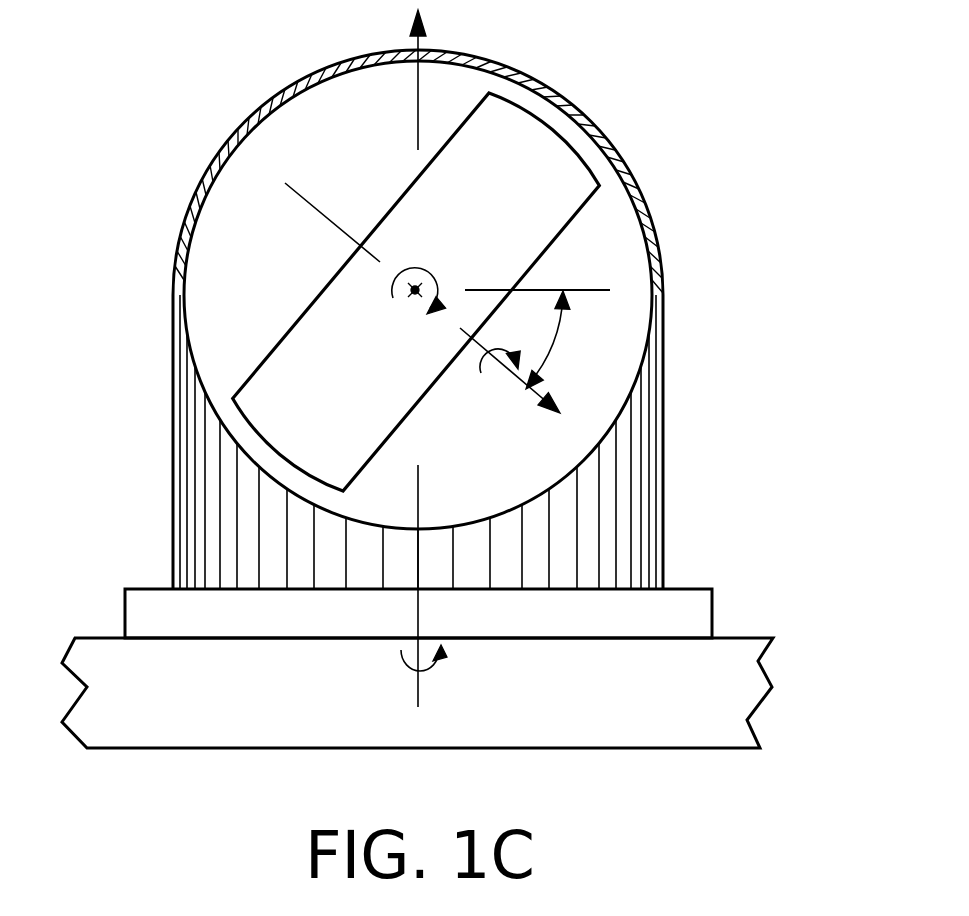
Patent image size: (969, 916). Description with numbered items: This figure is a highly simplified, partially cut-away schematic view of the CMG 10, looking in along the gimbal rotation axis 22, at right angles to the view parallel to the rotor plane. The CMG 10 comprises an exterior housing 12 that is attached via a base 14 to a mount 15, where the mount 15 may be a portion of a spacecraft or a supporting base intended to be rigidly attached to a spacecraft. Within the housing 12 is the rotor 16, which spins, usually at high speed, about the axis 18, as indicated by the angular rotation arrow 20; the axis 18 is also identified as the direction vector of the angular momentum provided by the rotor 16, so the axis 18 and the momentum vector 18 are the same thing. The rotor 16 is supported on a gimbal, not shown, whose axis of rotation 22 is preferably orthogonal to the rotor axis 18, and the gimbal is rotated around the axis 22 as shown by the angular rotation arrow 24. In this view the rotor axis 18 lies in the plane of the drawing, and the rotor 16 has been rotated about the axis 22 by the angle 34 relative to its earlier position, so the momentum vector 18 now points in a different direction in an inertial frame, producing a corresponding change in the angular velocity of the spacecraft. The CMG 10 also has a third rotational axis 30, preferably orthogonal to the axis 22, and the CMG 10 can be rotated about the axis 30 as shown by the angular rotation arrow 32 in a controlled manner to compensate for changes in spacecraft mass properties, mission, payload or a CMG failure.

The CMG 10 is at (748, 143).
The housing 12 is at (172, 498).
The base 14 is at (125, 588).
The mount 15 is at (206, 711).
The rotor 16 is at (510, 222).
The axis 18 is at (424, 320).
The angular rotation arrow 20 is at (480, 370).
The axis of rotation 22 is at (416, 302).
The angular rotation arrow 24 is at (410, 270).
The third rotational axis 30 is at (412, 24).
The angular rotation arrow 32 is at (411, 679).
The angle 34 is at (553, 352).